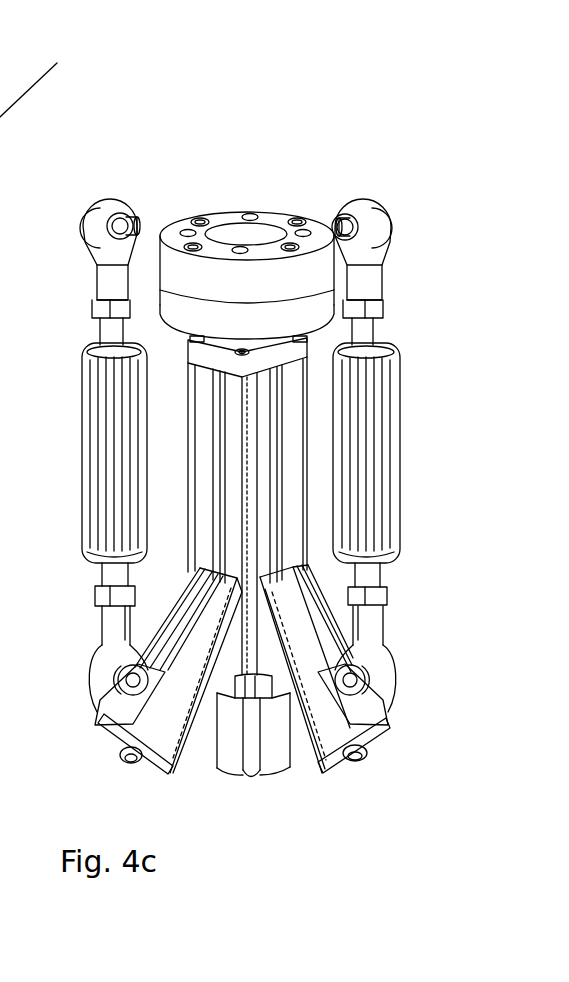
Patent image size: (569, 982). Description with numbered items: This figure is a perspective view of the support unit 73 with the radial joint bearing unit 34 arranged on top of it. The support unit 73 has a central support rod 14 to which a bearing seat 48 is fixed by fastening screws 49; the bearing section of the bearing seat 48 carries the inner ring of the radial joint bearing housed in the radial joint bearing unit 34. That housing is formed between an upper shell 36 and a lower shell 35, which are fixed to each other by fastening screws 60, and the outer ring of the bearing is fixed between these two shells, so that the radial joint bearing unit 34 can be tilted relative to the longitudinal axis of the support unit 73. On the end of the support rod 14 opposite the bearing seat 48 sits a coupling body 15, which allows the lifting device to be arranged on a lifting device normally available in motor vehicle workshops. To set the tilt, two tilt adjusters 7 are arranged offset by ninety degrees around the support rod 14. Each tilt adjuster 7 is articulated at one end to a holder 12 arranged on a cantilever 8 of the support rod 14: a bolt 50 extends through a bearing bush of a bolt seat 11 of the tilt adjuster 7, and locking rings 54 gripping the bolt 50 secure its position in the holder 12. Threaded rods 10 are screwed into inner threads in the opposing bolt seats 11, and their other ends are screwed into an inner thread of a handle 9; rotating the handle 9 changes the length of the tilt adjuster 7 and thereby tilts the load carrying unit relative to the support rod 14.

The tilt adjuster 7 is at (465, 277).
The cantilever 8 is at (163, 768).
The handle 9 is at (125, 470).
The threaded rod 10 is at (365, 335).
The bolt seat 11 is at (363, 278).
The holder 12 is at (135, 702).
The support rod 14 is at (262, 537).
The coupling body 15 is at (235, 752).
The radial joint bearing unit 34 is at (333, 132).
The lower shell 35 is at (192, 310).
The upper shell 36 is at (168, 262).
The bearing seat 48 is at (278, 362).
The fastening screw 49 is at (236, 351).
The bolt 50 is at (335, 232).
The locking ring 54 is at (340, 226).
The fastening screw 60 is at (197, 218).
The support unit 73 is at (0, 117).